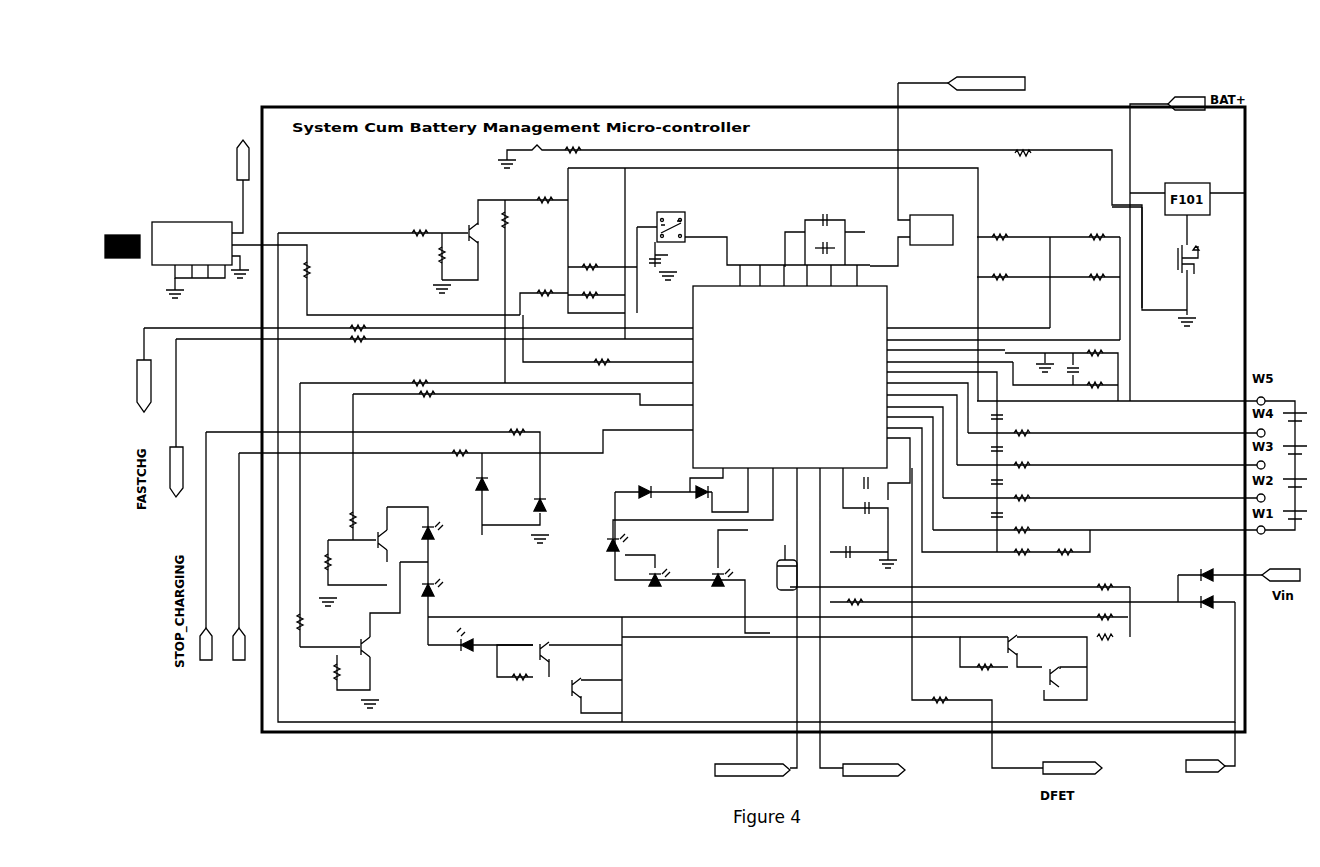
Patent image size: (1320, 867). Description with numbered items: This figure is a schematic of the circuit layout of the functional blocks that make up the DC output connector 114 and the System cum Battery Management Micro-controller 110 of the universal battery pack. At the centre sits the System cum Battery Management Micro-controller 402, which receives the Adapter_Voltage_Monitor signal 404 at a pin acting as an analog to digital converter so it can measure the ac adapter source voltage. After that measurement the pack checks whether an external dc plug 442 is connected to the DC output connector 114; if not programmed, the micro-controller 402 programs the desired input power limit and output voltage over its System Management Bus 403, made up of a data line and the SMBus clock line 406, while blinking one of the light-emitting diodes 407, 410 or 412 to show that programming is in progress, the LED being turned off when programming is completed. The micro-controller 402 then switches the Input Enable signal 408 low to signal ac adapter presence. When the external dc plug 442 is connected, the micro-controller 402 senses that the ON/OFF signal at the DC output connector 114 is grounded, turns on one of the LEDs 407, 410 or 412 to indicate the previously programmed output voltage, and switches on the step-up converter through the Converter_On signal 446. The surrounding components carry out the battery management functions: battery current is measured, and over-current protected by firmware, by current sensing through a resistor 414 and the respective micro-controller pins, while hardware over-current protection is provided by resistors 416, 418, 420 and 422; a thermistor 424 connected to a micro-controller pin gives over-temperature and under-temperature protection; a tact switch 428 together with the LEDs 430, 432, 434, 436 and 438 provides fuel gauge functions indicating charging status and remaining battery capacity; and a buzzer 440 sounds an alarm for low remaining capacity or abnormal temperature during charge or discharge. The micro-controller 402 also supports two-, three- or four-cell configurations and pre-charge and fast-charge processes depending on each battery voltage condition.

The System cum Battery Management Micro-controller 110 is at (1248, 668).
The DC output connector 114 is at (155, 262).
The System cum Battery Management Micro-controller 402 is at (857, 300).
The System Management Bus (SMBus) 403 is at (192, 735).
The Adapter_Voltage_Monitor signal 404 is at (975, 77).
The SMBus clock line (SCL) 406 is at (206, 665).
The light-emitting diode 407 is at (475, 655).
The Input Enable signal 408 is at (745, 768).
The light-emitting diode 410 is at (436, 608).
The light-emitting diode 412 is at (423, 545).
The resistor 414 is at (1103, 363).
The resistor 416 is at (1138, 221).
The resistor 418 is at (1015, 285).
The resistor 420 is at (1103, 243).
The resistor 422 is at (1103, 283).
The thermistor 424 is at (916, 213).
The tact switch 428 is at (652, 212).
The LED 430 is at (697, 478).
The LED 432 is at (645, 480).
The LED 434 is at (603, 550).
The LED 436 is at (657, 595).
The LED 438 is at (722, 595).
The buzzer 440 is at (788, 572).
The external dc plug 442 is at (125, 232).
The Converter_On signal 446 is at (870, 768).